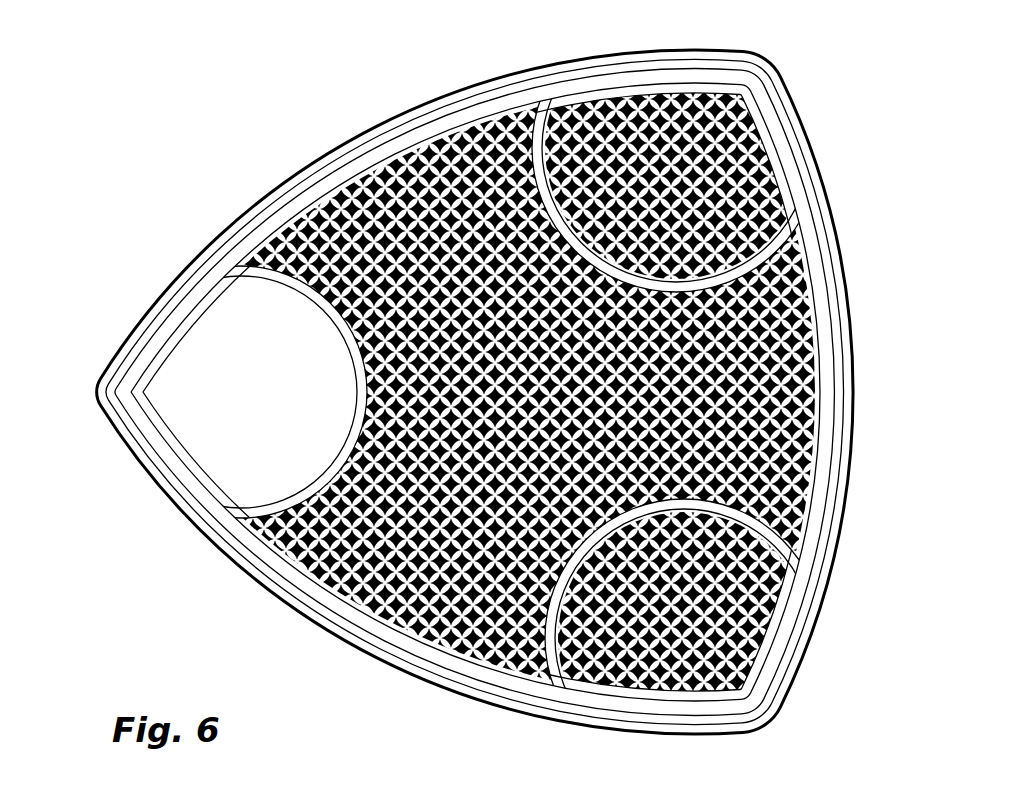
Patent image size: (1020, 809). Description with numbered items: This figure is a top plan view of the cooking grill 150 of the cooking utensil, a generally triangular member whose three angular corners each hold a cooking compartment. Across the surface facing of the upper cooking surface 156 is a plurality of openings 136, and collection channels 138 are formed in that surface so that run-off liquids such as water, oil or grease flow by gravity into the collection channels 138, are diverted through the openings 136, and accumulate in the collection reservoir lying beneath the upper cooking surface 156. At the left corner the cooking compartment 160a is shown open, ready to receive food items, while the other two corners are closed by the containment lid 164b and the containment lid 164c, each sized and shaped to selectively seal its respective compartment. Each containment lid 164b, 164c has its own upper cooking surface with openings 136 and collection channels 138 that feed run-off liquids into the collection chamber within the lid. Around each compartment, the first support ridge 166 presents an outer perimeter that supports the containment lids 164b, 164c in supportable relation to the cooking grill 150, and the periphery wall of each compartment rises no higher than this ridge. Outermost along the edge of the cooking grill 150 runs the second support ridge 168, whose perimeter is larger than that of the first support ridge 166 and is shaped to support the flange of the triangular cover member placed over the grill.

The cooking grill 150 is at (478, 388).
The openings 136 is at (372, 213).
The collection channels 138 is at (476, 359).
The upper cooking surface 156 is at (493, 122).
The cooking compartment 160a is at (241, 392).
The containment lid 164b is at (703, 85).
The containment lid 164c is at (740, 663).
The first support ridge 166 is at (275, 497).
The second support ridge 168 is at (135, 355).